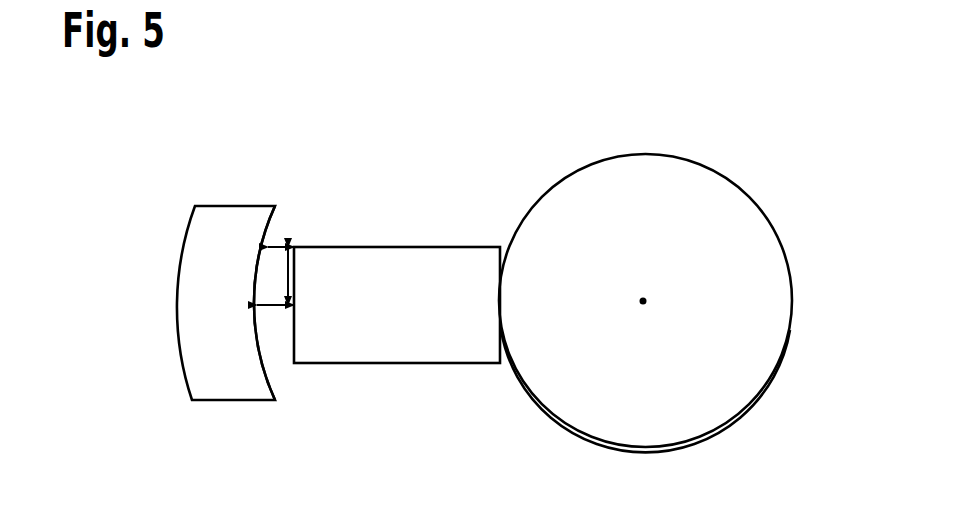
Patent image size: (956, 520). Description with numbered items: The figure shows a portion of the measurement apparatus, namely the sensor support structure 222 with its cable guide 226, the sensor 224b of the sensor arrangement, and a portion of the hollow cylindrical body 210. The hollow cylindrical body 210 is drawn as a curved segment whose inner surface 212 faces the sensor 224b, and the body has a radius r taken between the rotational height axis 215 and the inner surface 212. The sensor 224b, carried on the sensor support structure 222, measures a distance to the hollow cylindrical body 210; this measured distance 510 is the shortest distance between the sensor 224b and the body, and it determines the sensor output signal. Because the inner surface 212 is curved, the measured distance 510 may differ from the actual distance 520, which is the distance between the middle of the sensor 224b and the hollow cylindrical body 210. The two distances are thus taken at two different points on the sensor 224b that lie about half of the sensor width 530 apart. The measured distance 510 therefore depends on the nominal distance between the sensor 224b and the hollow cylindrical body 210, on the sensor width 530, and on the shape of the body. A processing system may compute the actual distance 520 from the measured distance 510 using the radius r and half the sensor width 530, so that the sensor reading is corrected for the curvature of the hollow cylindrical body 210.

The hollow cylindrical body 210 is at (230, 222).
The inner surface 212 is at (273, 375).
The rotational height axis 215 is at (643, 301).
The sensor support structure 222 is at (735, 212).
The sensor 224b is at (428, 333).
The cable guide 226 is at (738, 382).
The measured distance 510 is at (270, 244).
The actual distance 520 is at (275, 307).
The sensor width 530 is at (288, 275).